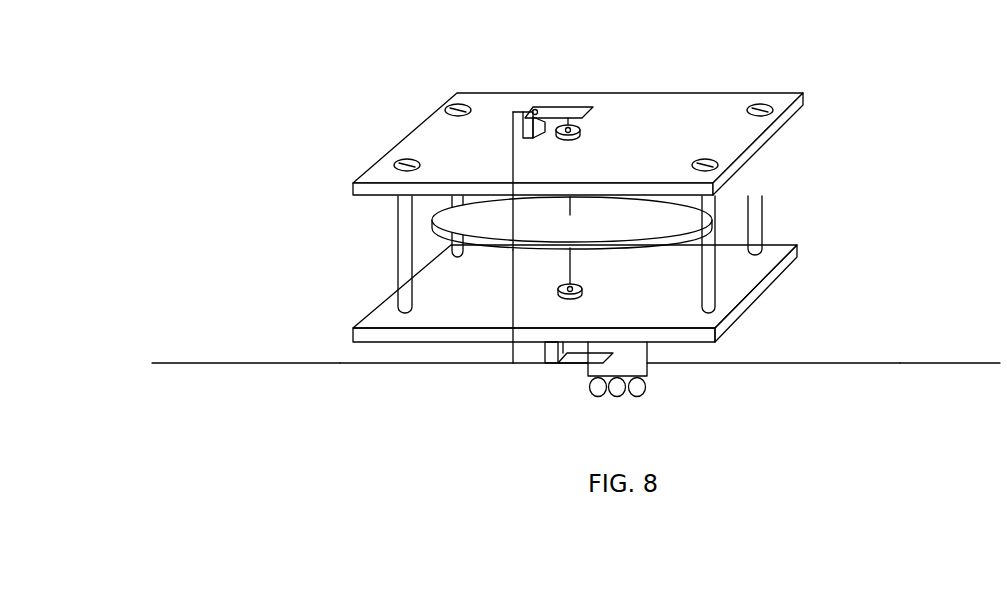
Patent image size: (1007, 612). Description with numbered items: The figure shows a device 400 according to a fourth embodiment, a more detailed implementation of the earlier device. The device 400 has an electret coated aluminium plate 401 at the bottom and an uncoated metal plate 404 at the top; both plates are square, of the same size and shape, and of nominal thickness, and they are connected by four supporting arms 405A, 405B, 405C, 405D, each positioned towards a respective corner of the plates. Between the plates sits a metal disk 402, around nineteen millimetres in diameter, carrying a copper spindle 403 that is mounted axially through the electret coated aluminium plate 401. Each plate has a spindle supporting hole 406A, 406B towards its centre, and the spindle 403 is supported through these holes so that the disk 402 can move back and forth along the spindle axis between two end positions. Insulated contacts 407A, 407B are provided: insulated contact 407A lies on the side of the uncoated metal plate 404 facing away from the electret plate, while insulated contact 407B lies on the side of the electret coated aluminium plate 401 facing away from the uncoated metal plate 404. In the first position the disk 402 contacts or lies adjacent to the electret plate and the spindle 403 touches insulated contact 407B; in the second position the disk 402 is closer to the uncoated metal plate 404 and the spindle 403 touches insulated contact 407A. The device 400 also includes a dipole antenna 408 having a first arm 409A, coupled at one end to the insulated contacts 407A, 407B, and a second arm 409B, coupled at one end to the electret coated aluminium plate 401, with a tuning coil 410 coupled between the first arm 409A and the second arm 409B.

The device 400 is at (862, 68).
The electret coated aluminium plate 401 is at (766, 284).
The disk 402 is at (720, 222).
The copper spindle 403 is at (574, 258).
The uncoated metal plate 404 is at (420, 123).
The supporting arm 405A is at (398, 247).
The supporting arm 405B is at (445, 200).
The supporting arm 405C is at (763, 173).
The supporting arm 405D is at (716, 290).
The spindle supporting hole 406A is at (582, 129).
The spindle supporting hole 406B is at (583, 297).
The insulated contact 407A is at (568, 102).
The insulated contact 407B is at (568, 367).
The dipole antenna 408 is at (333, 365).
The first arm 409A is at (193, 365).
The second arm 409B is at (952, 362).
The tuning coil 410 is at (645, 389).